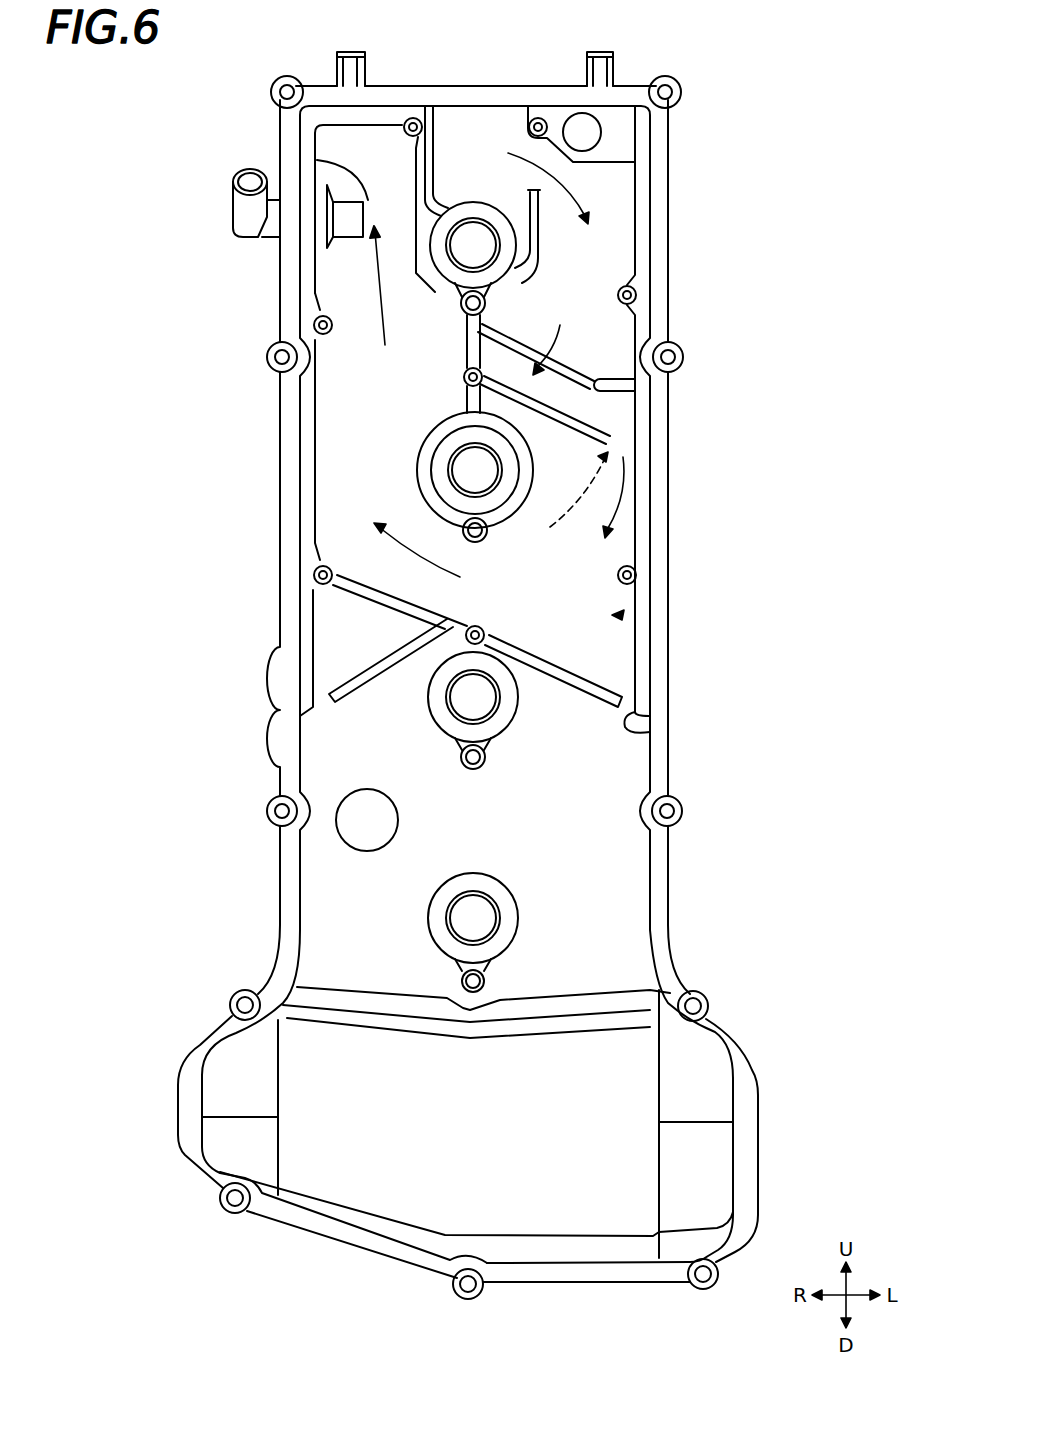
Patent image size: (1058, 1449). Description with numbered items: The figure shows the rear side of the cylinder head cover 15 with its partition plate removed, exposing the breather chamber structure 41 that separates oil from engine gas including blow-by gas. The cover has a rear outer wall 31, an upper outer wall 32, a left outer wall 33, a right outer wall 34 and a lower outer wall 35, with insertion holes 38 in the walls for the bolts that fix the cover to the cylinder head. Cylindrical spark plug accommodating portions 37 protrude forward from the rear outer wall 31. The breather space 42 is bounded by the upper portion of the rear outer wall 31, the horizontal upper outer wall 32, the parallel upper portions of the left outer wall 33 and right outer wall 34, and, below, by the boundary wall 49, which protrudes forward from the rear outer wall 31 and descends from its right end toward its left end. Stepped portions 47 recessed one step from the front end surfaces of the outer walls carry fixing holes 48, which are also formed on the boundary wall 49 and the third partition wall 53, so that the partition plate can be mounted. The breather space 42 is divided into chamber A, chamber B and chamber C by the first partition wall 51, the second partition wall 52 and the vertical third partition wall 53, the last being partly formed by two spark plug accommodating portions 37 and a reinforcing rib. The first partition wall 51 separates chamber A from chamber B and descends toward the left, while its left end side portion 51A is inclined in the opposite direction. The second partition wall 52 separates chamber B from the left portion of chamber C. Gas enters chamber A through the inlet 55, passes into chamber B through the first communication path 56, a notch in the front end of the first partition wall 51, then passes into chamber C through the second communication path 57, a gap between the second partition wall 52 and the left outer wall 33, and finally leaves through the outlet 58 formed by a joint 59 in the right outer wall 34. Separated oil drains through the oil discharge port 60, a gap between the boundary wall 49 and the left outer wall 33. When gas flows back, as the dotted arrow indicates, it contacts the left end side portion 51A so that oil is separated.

The cylinder head cover 15 is at (292, 54).
The rear outer wall 31 is at (583, 838).
The upper outer wall 32 is at (452, 85).
The left outer wall 33 is at (668, 660).
The right outer wall 34 is at (278, 548).
The lower outer wall 35 is at (400, 1265).
The spark plug accommodating portion 37 is at (440, 288).
The insertion hole 38 is at (272, 818).
The breather chamber structure 41 is at (644, 60).
The breather space 42 is at (622, 615).
The stepped portion 47 is at (387, 113).
The fixing hole 48 is at (315, 320).
The boundary wall 49 is at (405, 618).
The first partition wall 51 is at (573, 352).
The left end side portion of the first partition wall 51A is at (608, 380).
The second partition wall 52 is at (552, 422).
The third partition wall 53 is at (465, 400).
The inlet 55 is at (480, 138).
The first communication path 56 is at (520, 335).
The second communication path 57 is at (628, 440).
The outlet 58 is at (365, 185).
The joint 59 is at (240, 215).
The oil discharge port 60 is at (650, 730).
The chamber A is at (600, 242).
The chamber B is at (620, 428).
The chamber C is at (355, 430).